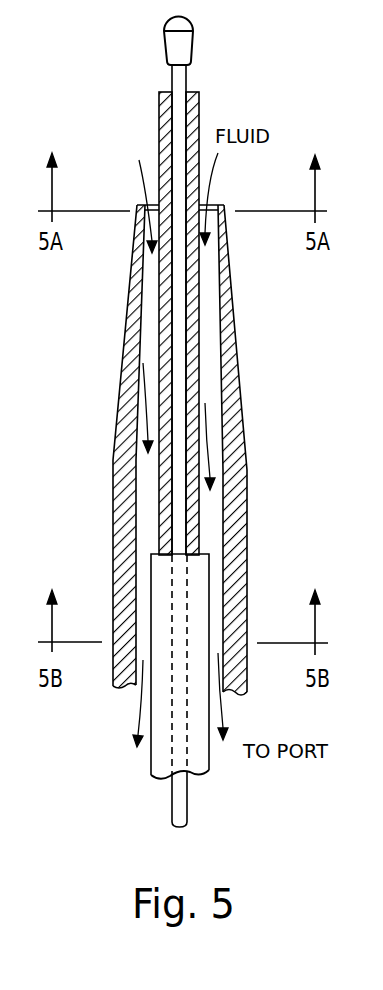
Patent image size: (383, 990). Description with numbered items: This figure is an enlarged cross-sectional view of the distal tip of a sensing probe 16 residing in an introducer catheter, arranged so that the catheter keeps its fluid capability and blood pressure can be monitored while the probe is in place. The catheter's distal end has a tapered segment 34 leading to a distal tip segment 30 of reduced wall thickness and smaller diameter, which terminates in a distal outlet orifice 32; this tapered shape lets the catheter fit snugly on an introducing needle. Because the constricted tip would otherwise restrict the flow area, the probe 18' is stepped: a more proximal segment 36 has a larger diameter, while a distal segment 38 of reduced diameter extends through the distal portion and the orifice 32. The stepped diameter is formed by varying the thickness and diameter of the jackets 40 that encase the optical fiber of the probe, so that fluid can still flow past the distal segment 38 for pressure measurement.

The sensing probe 16 is at (165, 64).
The jacket 40 is at (183, 372).
The distal outlet orifice 32 is at (210, 203).
The distal tip segment 30 is at (162, 450).
The tapered segment 34 is at (97, 215).
The distal segment 38 is at (198, 517).
The proximal segment 36 is at (181, 698).
The probe 18' is at (205, 806).